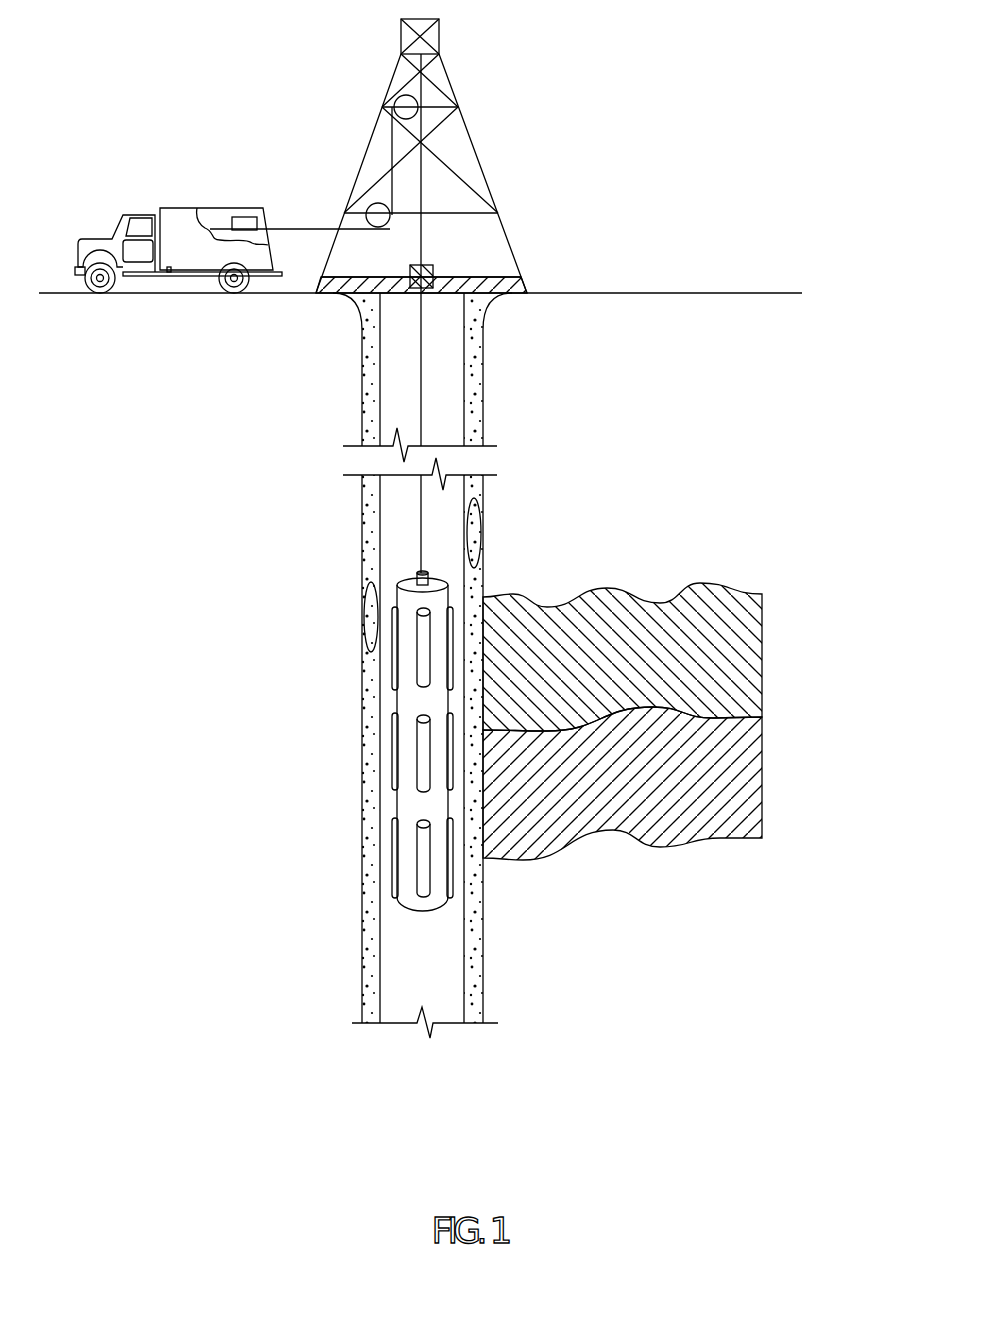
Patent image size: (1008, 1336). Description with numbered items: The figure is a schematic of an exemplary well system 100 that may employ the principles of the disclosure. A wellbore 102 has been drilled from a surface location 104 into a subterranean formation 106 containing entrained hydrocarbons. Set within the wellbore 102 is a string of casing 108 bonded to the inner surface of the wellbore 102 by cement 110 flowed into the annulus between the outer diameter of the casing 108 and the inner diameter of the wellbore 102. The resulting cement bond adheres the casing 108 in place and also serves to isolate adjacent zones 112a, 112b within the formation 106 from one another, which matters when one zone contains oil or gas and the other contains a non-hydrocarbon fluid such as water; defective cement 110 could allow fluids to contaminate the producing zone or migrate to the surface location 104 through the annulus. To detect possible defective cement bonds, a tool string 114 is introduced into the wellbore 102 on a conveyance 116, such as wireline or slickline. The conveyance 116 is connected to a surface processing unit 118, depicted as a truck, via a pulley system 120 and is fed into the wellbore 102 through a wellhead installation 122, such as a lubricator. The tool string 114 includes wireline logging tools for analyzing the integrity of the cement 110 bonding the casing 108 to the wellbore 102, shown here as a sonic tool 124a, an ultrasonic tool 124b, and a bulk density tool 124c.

The well system 100 is at (665, 113).
The wellbore 102 is at (404, 964).
The surface location 104 is at (705, 290).
The subterranean formation 106 is at (674, 685).
The casing 108 is at (465, 1005).
The cement 110 is at (372, 1032).
The zone 112a is at (595, 668).
The zone 112b is at (595, 791).
The tool string 114 is at (364, 738).
The conveyance 116 is at (423, 503).
The surface processing unit 118 is at (218, 208).
The pulley system 120 is at (400, 101).
The wellhead installation 122 is at (435, 273).
The sonic tool 124a is at (393, 673).
The ultrasonic tool 124b is at (393, 780).
The bulk density tool 124c is at (393, 888).